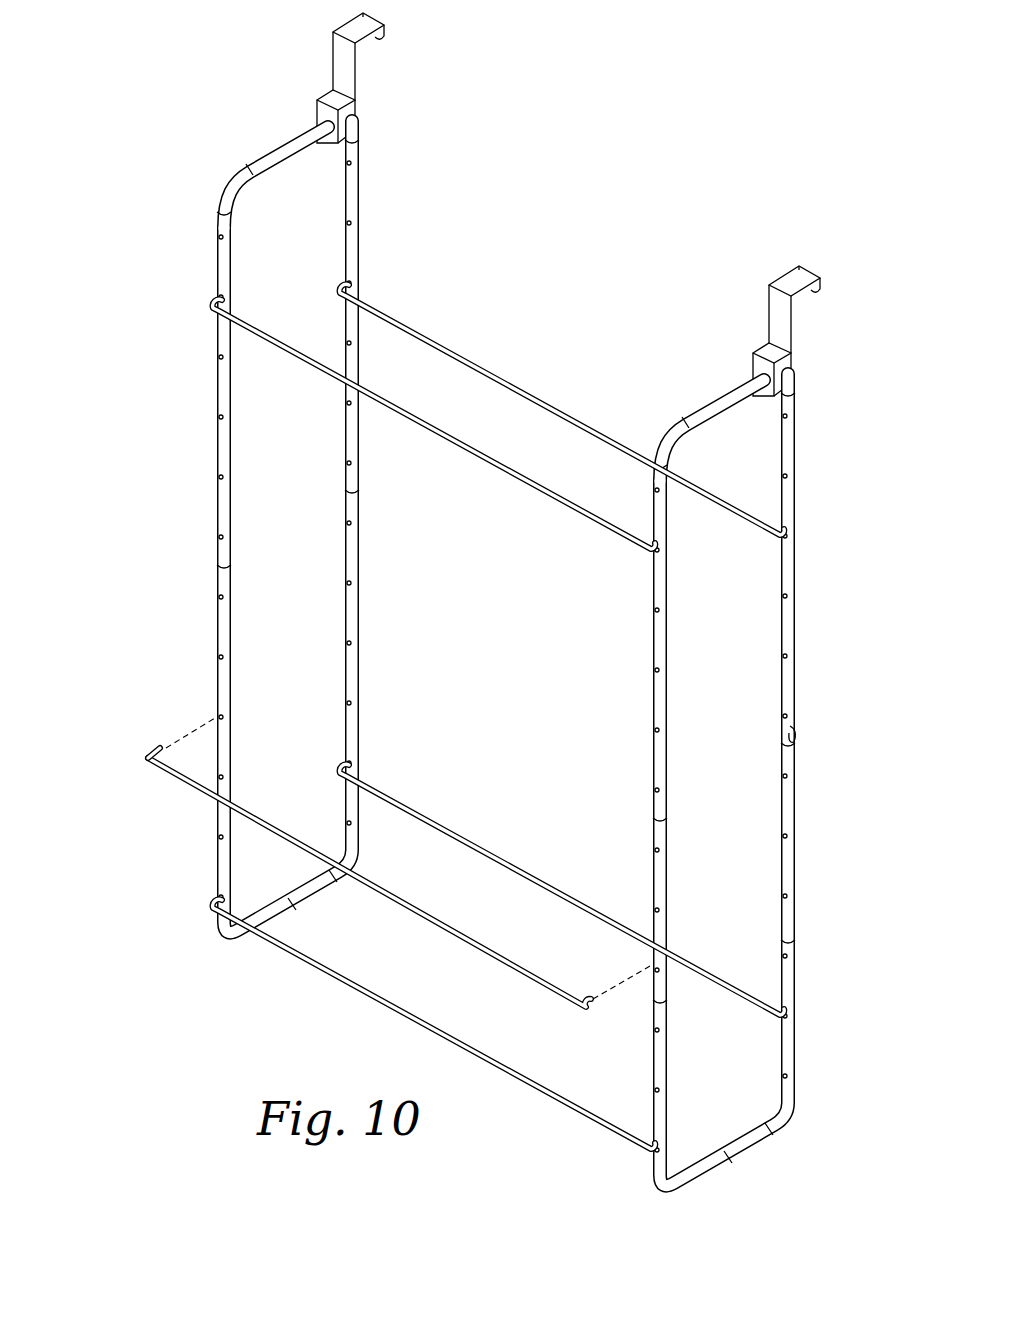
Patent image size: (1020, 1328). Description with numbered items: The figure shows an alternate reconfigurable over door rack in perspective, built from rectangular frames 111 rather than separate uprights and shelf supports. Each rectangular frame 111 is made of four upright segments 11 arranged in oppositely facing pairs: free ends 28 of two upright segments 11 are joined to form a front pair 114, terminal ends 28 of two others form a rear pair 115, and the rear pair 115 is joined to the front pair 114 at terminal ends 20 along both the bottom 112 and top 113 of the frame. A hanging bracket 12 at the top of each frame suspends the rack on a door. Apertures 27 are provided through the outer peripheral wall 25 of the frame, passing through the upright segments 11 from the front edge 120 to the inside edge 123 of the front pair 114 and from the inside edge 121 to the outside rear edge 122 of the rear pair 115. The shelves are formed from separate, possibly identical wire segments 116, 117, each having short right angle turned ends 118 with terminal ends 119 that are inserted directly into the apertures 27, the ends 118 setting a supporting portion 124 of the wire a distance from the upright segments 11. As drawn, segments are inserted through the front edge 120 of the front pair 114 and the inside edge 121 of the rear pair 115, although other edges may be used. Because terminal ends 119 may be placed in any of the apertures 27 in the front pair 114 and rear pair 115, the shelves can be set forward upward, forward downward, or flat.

The upright 11 is at (356, 197).
The hanging bracket 12 is at (360, 86).
The terminal end 20 is at (318, 128).
The outer peripheral wall 25 is at (656, 1065).
The aperture 27 is at (218, 657).
The free end 28 is at (797, 718).
The rectangular frame 111 is at (98, 556).
The bottom 112 is at (687, 270).
The top 113 is at (740, 1186).
The front pair 114 is at (587, 1147).
The rear pair 115 is at (836, 526).
The wire segment 116 is at (462, 443).
The wire segment 117 is at (420, 330).
The right angle turned end 118 is at (172, 778).
The terminal end 119 is at (162, 752).
The front edge 120 is at (655, 640).
The inside edge 121 is at (788, 878).
The outside rear edge 122 is at (800, 925).
The inside edge 123 is at (668, 985).
The supporting portion 124 is at (512, 378).